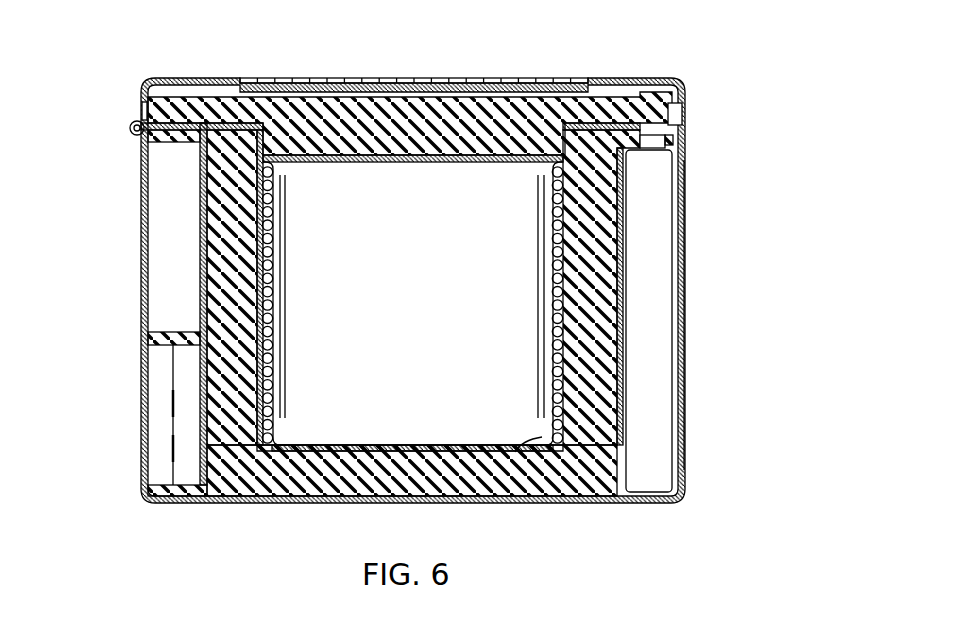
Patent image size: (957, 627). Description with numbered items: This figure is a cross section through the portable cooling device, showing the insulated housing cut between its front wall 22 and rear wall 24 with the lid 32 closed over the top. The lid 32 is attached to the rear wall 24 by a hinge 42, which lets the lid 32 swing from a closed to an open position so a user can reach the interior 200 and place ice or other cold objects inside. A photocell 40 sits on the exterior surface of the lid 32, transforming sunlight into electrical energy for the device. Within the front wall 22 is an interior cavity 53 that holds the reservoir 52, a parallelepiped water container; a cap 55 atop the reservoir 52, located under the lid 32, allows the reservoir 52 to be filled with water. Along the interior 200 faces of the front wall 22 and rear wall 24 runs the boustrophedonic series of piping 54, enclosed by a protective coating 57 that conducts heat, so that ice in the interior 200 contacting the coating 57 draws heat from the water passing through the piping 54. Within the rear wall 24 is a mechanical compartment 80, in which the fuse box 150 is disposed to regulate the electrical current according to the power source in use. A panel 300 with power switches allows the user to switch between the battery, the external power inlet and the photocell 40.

The front wall 22 is at (700, 378).
The rear wall 24 is at (118, 290).
The lid 32 is at (617, 80).
The photocell 40 is at (393, 80).
The hinge 42 is at (130, 127).
The reservoir 52 is at (660, 170).
The interior cavity 53 is at (684, 275).
The boustrophedonic series of piping 54 is at (258, 233).
The cap 55 is at (683, 124).
The protective coating 57 is at (523, 455).
The mechanical compartment 80 is at (163, 407).
The fuse box 150 is at (160, 445).
The interior 200 is at (422, 423).
The panel 300 is at (143, 108).